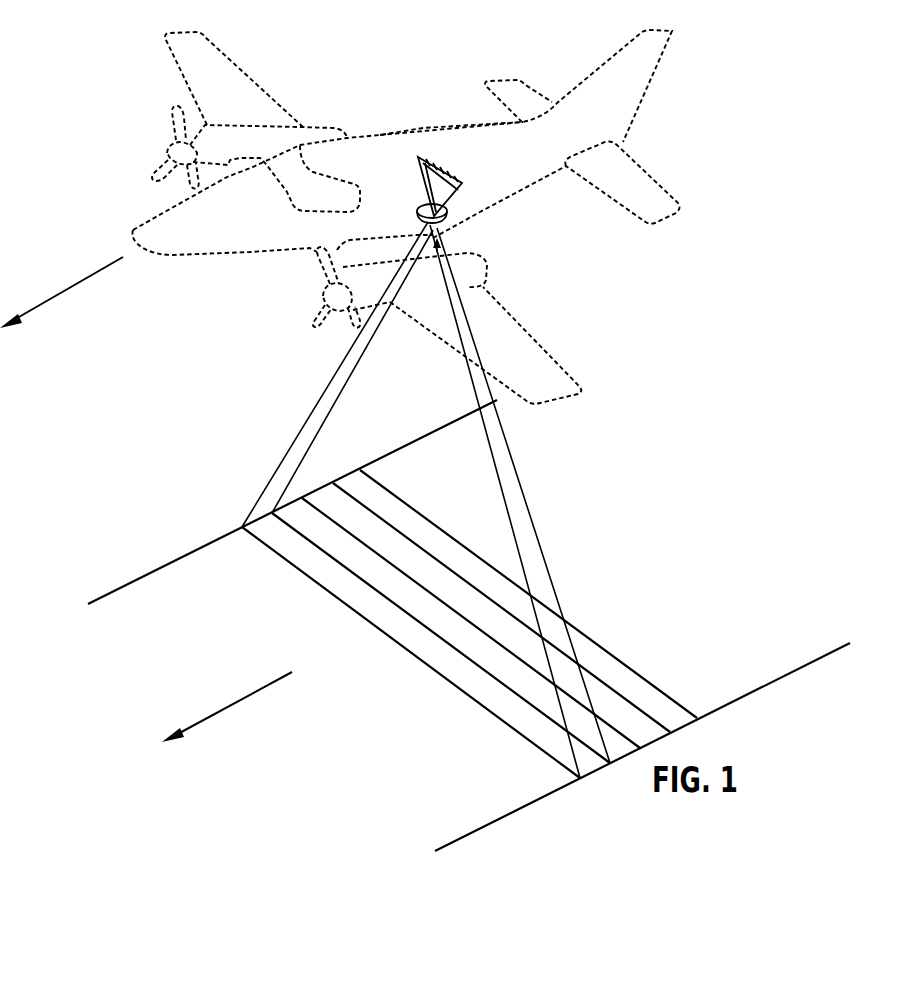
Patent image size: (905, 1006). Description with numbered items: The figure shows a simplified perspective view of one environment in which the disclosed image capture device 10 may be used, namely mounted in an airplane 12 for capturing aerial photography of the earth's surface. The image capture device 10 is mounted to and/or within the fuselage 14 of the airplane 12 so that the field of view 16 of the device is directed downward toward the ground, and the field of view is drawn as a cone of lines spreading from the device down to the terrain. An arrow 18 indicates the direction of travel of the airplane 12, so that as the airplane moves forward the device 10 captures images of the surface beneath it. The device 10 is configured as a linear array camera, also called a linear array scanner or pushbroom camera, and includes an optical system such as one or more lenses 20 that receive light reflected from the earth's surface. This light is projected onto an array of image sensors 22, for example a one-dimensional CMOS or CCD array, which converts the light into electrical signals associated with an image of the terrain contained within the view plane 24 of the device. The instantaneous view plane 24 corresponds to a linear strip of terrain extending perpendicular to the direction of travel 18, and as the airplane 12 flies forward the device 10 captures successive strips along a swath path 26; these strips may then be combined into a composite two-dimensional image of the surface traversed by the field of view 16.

The image capture device 10 is at (489, 186).
The airplane 12 is at (303, 99).
The fuselage 14 is at (423, 127).
The field of view 16 is at (532, 521).
The direction of travel 18 is at (72, 281).
The lens 20 is at (441, 213).
The array of image sensors 22 is at (436, 167).
The view plane 24 is at (559, 745).
The swath path 26 is at (225, 707).